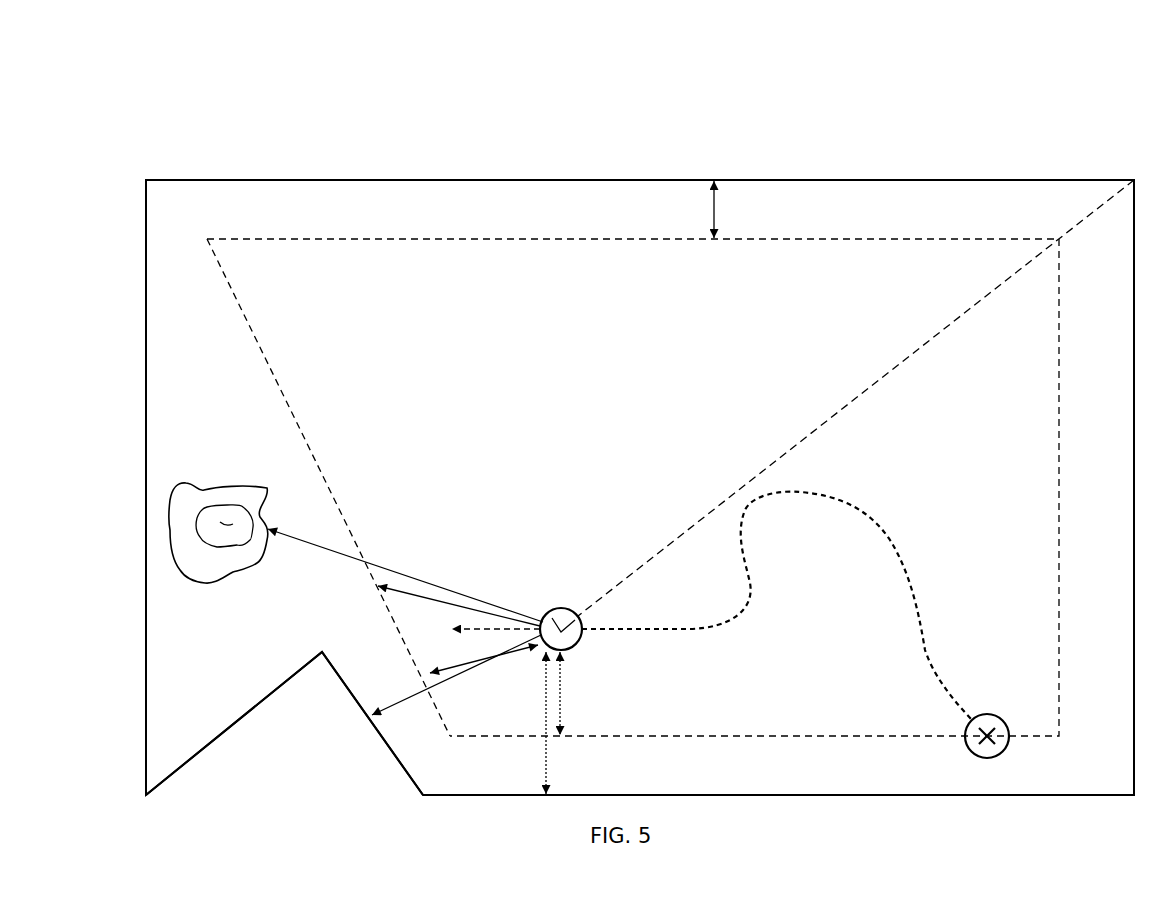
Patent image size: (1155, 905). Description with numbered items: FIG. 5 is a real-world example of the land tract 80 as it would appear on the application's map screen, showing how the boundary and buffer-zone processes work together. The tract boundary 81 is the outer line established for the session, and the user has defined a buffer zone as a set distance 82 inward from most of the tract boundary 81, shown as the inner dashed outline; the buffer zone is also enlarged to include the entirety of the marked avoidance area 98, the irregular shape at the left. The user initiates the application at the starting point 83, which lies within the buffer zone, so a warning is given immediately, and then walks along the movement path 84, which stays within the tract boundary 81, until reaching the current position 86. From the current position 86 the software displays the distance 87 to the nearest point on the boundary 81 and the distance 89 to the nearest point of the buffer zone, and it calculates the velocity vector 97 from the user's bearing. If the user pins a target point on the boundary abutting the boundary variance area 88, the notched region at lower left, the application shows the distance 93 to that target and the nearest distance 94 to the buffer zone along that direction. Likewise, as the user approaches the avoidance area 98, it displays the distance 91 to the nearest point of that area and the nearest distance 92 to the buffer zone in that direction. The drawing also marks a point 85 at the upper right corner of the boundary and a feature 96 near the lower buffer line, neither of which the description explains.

The land tract 80 is at (997, 77).
The tract boundary 81 is at (678, 180).
The set distance 82 is at (716, 205).
The starting point 83 is at (992, 715).
The movement path 84 is at (843, 500).
The corner point 85 is at (1134, 180).
The current position 86 is at (565, 608).
The distance to boundary 87 is at (549, 748).
The boundary variance area 88 is at (325, 732).
The distance to buffer zone 89 is at (564, 692).
The distance to avoidance area 91 is at (392, 570).
The nearest distance to buffer zone toward avoidance area 92 is at (435, 598).
The distance to target 93 is at (322, 462).
The nearest distance to buffer zone toward target 94 is at (512, 652).
The inner boundary 96 is at (440, 718).
The velocity vector 97 is at (888, 368).
The marked avoidance area 98 is at (186, 468).